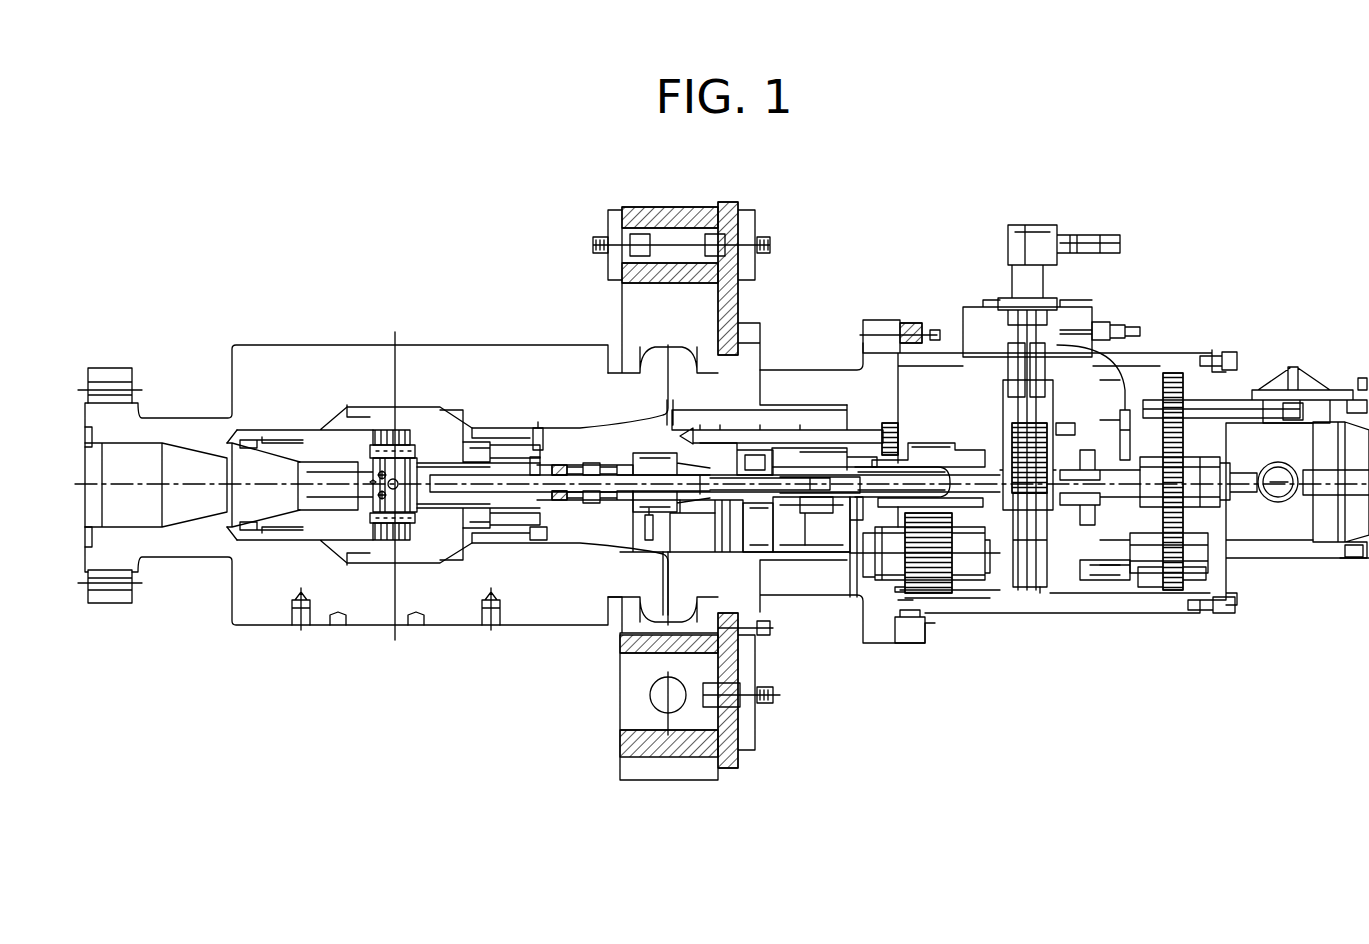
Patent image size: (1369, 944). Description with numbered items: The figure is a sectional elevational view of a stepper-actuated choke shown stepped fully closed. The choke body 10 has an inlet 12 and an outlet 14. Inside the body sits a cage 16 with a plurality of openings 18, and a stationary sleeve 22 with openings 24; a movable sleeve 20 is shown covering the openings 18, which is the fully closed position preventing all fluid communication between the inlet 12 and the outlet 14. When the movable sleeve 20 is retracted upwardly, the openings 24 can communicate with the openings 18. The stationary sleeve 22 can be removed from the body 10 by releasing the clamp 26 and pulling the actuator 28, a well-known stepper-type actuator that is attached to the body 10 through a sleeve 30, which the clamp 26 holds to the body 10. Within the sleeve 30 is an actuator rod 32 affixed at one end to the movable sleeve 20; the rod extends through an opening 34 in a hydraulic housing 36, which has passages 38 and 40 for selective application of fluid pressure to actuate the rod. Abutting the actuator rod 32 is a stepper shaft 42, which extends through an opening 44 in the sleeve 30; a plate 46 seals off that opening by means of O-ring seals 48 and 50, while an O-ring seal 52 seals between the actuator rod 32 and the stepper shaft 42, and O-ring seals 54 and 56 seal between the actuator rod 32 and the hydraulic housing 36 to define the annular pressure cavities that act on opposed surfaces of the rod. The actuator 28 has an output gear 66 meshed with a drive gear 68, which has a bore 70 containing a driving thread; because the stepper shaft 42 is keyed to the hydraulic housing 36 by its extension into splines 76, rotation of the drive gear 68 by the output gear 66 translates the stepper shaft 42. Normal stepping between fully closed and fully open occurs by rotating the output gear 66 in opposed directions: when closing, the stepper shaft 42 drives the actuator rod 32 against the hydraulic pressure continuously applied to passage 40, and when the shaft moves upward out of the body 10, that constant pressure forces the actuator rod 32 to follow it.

The choke body 10 is at (246, 345).
The inlet 12 is at (395, 628).
The outlet 14 is at (141, 412).
The cage 16 is at (402, 463).
The openings 18 is at (380, 480).
The movable sleeve 20 is at (423, 460).
The stationary sleeve 22 is at (423, 527).
The openings 24 is at (411, 530).
The clamp 26 is at (740, 292).
The actuator 28 is at (1167, 350).
The sleeve 30 is at (763, 370).
The actuator rod 32 is at (560, 488).
The opening 34 is at (640, 503).
The hydraulic housing 36 is at (828, 540).
The passage 38 is at (773, 534).
The passage 40 is at (727, 513).
The stepper shaft 42 is at (922, 492).
The opening 44 is at (851, 503).
The plate 46 is at (898, 437).
The O-ring seal 48 is at (843, 457).
The O-ring seal 50 is at (843, 457).
The O-ring seal 52 is at (742, 494).
The O-ring seal 54 is at (670, 453).
The O-ring seal 56 is at (733, 457).
The output gear 66 is at (933, 572).
The drive gear 68 is at (933, 455).
The bore 70 is at (973, 463).
The splines 76 is at (817, 513).